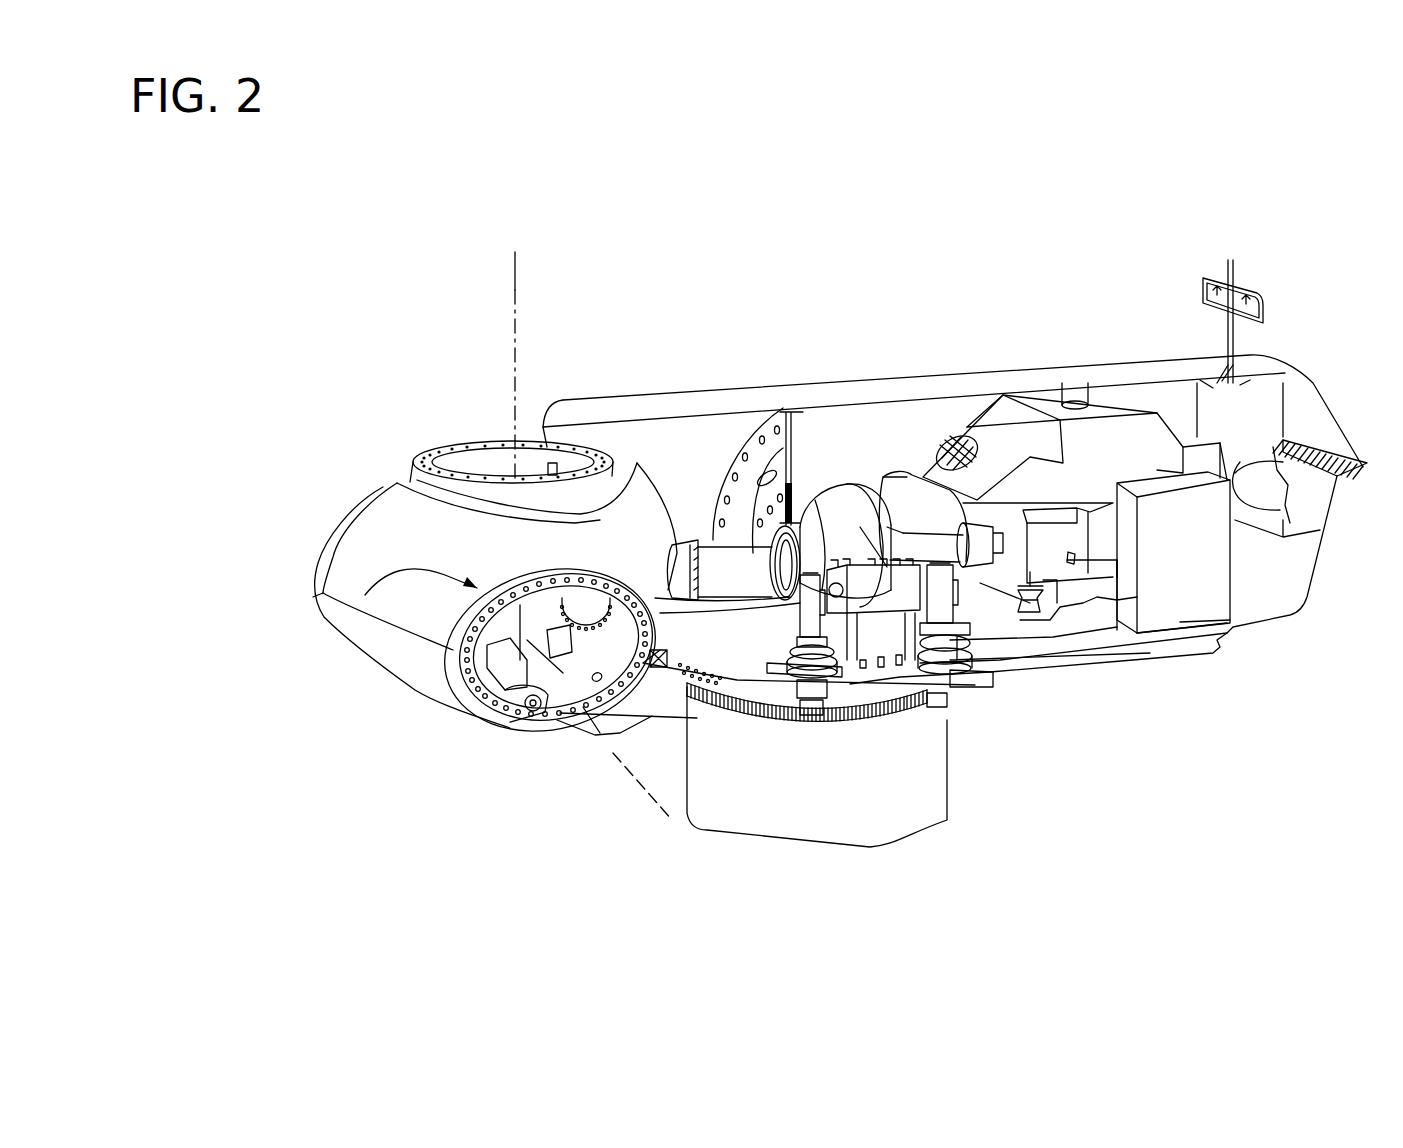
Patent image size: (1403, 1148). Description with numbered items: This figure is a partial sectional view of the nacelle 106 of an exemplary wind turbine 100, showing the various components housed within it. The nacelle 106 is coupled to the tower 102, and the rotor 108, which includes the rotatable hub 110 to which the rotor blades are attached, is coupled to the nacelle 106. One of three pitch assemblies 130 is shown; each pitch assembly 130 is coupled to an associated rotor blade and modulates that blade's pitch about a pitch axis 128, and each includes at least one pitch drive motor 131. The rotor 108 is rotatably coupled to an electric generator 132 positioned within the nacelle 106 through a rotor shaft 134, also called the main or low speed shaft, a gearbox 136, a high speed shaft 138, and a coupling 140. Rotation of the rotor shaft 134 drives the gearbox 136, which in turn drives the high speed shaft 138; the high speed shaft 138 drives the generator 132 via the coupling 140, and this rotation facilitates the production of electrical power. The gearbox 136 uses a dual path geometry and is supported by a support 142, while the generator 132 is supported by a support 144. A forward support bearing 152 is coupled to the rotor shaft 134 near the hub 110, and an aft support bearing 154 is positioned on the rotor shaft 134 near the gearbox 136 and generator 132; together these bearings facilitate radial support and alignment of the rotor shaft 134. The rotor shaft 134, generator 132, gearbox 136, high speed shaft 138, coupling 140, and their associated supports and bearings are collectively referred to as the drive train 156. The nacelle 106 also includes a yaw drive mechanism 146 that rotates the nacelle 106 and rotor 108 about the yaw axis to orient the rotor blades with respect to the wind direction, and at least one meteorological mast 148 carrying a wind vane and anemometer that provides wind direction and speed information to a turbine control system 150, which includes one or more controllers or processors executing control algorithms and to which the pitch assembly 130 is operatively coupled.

The wind turbine 100 is at (338, 313).
The tower 102 is at (873, 830).
The nacelle 106 is at (705, 312).
The rotor 108 is at (300, 580).
The hub 110 is at (417, 482).
The pitch axis 128 is at (515, 267).
The pitch assembly 130 is at (365, 595).
The pitch drive motor 131 is at (482, 640).
The electric generator 132 is at (1047, 555).
The rotor shaft 134 is at (703, 552).
The gearbox 136 is at (920, 497).
The high speed shaft 138 is at (955, 568).
The coupling 140 is at (1007, 495).
The support 142 is at (920, 693).
The support 144 is at (1047, 578).
The yaw drive mechanism 146 is at (805, 683).
The meteorological mast 148 is at (1260, 300).
The turbine control system 150 is at (1213, 583).
The forward support bearing 152 is at (672, 648).
The aft support bearing 154 is at (873, 510).
The drive train 156 is at (915, 418).